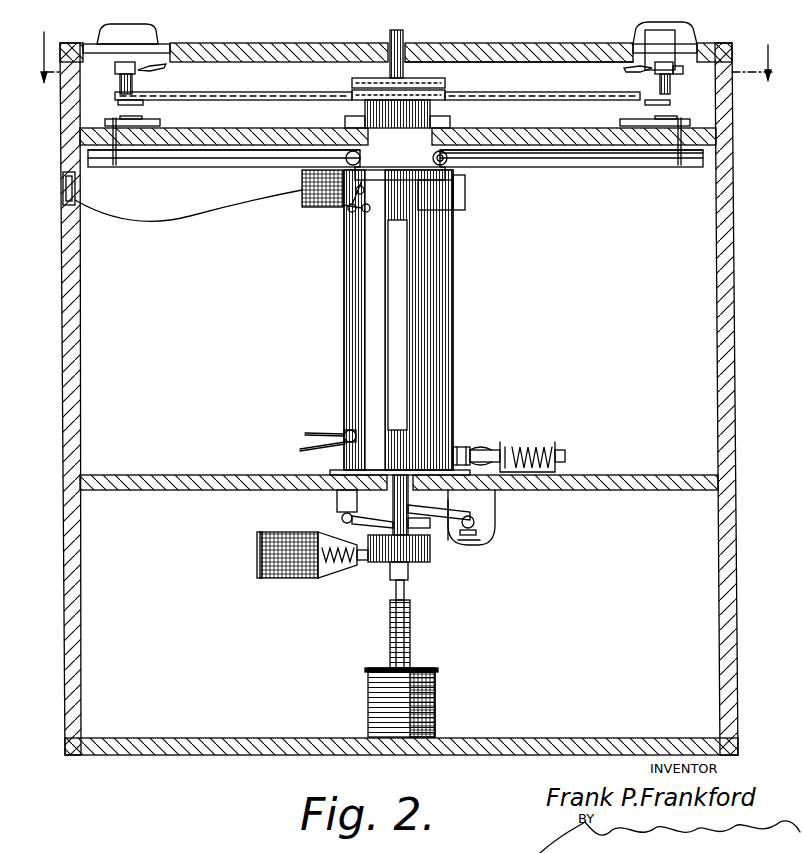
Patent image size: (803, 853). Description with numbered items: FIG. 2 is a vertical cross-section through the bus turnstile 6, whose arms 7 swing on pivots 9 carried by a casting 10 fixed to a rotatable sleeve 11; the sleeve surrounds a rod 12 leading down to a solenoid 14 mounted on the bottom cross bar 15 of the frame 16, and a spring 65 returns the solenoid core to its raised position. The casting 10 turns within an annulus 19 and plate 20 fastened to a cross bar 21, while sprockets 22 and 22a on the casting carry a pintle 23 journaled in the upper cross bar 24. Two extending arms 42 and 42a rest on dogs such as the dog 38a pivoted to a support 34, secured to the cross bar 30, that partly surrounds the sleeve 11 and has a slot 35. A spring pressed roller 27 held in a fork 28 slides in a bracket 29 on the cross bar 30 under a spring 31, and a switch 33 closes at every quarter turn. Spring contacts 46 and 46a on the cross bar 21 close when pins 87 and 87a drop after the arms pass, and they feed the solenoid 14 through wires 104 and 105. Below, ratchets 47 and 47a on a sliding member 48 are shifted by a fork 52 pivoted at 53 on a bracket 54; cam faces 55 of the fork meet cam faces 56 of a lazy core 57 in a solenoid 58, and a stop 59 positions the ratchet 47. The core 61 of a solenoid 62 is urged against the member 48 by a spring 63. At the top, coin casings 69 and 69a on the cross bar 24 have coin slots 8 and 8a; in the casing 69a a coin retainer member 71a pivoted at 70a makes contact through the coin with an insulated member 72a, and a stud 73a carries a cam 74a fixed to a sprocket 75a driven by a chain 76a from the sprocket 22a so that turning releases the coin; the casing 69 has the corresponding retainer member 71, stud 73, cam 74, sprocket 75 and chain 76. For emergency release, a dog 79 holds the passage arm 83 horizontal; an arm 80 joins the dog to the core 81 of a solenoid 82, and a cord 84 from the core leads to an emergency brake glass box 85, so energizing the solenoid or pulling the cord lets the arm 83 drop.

The turnstile 6 is at (405, 57).
The arms 7 is at (188, 170).
The coin slot 8 is at (151, 34).
The coin slot 8a is at (666, 30).
The pivot 9 is at (455, 168).
The casting 10 is at (364, 114).
The rotatable sleeve 11 is at (400, 474).
The rod 12 is at (410, 604).
The solenoid 14 is at (437, 690).
The bottom cross bar 15 is at (541, 736).
The frame 16 is at (737, 312).
The annulus 19 is at (451, 122).
The plate 20 is at (344, 122).
The cross bar 21 is at (541, 152).
The sprocket 22 is at (446, 95).
The sprocket 22a is at (352, 82).
The pintle 23 is at (398, 40).
The upper cross bar 24 is at (549, 52).
The spring pressed roller 27 is at (463, 446).
The fork 28 is at (481, 449).
The bracket 29 is at (559, 450).
The cross bar 30 is at (399, 501).
The spring 31 is at (532, 444).
The switch 33 is at (346, 430).
The support 34 is at (455, 276).
The slot 35 is at (400, 348).
The dog 38a is at (466, 190).
The extending arm 42 is at (235, 168).
The extending arm 42a is at (611, 168).
The spring contact 46 is at (150, 118).
The spring contact 46a is at (672, 119).
The ratchet 47 is at (416, 563).
The ratchet 47a is at (388, 563).
The sliding ratchet member 48 is at (428, 530).
The fork 52 is at (450, 535).
The pivot 53 is at (342, 521).
The bracket 54 is at (340, 500).
The cam face 55 is at (471, 511).
The cam face 56 is at (476, 522).
The lazy core 57 is at (496, 530).
The solenoid 58 is at (477, 534).
The stop 59 is at (470, 542).
The core 61 is at (268, 580).
The solenoid 62 is at (257, 538).
The spring 63 is at (332, 578).
The spring 65 is at (389, 645).
The coin casing 69 is at (120, 32).
The coin casing 69a is at (697, 47).
The pivot 70a is at (680, 75).
The hanger 71 is at (118, 72).
The coin retainer member 71a is at (680, 36).
The contact member 72a is at (644, 36).
The contact blade 73 is at (165, 70).
The stud 73a is at (630, 70).
The stem 74 is at (134, 78).
The cam 74a is at (672, 92).
The plate 75 is at (124, 104).
The sprocket 75a is at (648, 103).
The bar 76 is at (248, 93).
The chain 76a is at (546, 104).
The dog 79 is at (435, 210).
The arm 80 is at (350, 212).
The core 81 is at (345, 208).
The solenoid 82 is at (302, 200).
The passage arm 83 is at (398, 176).
The cord 84 is at (188, 205).
The emergency brake glass box 85 is at (62, 194).
The pin 87 is at (117, 166).
The pin 87a is at (705, 138).
The wires 104 is at (318, 432).
The wire 105 is at (316, 448).